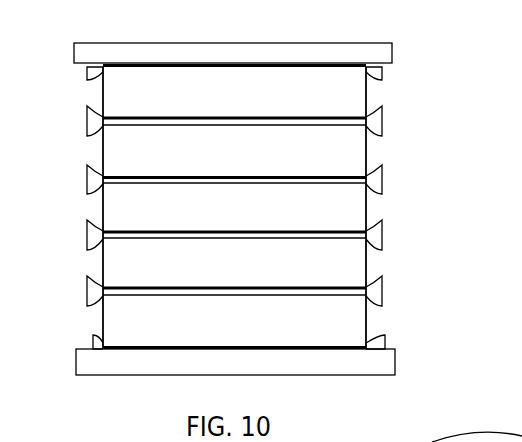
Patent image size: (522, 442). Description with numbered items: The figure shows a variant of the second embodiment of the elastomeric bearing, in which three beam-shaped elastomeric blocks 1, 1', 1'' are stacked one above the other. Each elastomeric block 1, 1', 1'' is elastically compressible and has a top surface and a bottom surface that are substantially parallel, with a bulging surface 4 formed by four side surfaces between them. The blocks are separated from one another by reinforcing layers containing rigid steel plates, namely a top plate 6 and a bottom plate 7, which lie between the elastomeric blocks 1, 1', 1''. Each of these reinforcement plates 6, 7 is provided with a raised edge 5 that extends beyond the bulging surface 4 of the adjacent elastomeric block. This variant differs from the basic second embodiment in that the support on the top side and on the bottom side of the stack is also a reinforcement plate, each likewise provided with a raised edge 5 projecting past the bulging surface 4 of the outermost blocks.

The beam-shaped elastomeric block 1 is at (234, 178).
The second beam-shaped elastomeric block 1' is at (234, 113).
The third beam-shaped elastomeric block 1'' is at (234, 263).
The bulging surface 4 is at (366, 206).
The raised edge 5 is at (380, 75).
The top plate 6 is at (143, 179).
The bottom plate 7 is at (152, 231).